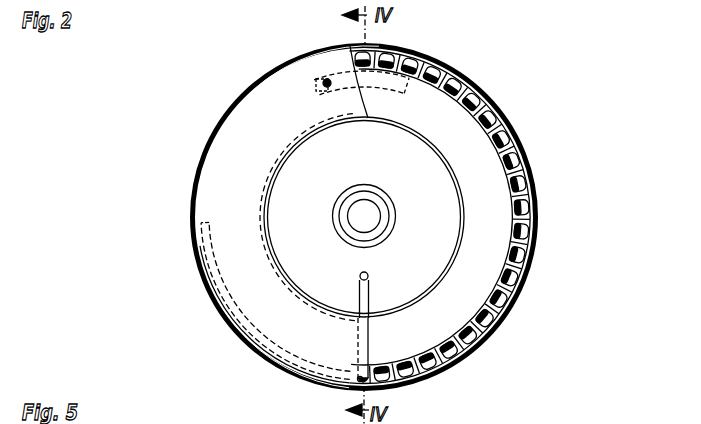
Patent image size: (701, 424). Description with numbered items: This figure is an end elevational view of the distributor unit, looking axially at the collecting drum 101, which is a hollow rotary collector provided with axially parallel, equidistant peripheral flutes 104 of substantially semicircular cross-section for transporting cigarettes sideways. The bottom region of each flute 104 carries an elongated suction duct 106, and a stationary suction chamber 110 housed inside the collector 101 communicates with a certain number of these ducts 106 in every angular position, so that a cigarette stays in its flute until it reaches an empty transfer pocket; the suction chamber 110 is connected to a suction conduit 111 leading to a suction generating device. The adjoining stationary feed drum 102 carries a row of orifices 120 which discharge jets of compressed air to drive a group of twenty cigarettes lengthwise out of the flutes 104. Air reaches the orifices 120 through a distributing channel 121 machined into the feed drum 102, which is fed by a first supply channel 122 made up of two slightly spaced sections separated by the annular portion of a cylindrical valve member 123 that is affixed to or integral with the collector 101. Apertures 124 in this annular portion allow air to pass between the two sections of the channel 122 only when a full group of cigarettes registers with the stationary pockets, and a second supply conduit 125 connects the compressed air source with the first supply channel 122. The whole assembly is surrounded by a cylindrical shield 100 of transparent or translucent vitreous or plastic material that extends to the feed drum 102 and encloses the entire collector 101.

The cylindrical shield 100 is at (531, 264).
The collecting drum 101 is at (495, 324).
The feed drum 102 is at (208, 172).
The flutes 104 is at (392, 386).
The suction duct 106 is at (448, 352).
The suction chamber 110 is at (366, 96).
The suction conduit 111 is at (318, 87).
The orifices 120 is at (270, 360).
The distributing channel 121 is at (326, 391).
The first supply channel 122 is at (360, 289).
The cylindrical valve member 123 is at (436, 284).
The apertures 124 is at (326, 128).
The second supply conduit 125 is at (360, 273).